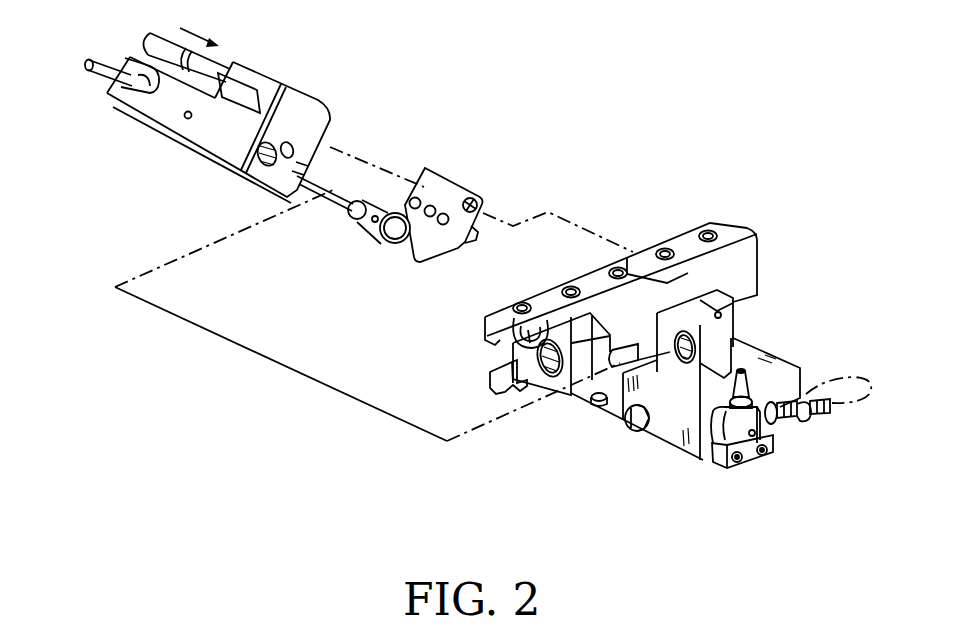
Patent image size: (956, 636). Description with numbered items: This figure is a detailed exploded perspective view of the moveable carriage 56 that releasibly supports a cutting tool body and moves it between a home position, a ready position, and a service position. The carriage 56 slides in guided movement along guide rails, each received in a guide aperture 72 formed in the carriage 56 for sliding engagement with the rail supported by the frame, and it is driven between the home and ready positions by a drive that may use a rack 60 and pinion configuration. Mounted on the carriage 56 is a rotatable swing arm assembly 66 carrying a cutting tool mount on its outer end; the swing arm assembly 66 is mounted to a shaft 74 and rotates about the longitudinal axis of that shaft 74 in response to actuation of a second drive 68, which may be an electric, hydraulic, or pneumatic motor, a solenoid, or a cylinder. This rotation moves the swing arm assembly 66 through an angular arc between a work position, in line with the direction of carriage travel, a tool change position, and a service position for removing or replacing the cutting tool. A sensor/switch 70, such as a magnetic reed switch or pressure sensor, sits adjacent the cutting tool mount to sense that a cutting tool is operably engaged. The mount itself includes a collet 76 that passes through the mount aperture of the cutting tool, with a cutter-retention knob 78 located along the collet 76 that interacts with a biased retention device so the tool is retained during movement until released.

The carriage 56 is at (606, 186).
The rack 60 is at (502, 396).
The swing arm assembly 66 is at (402, 118).
The second drive 68 is at (706, 471).
The sensor/switch 70 is at (158, 78).
The guide aperture 72 is at (538, 357).
The shaft 74 is at (171, 42).
The collet 76 is at (91, 64).
The cutter-retention knob 78 is at (110, 85).